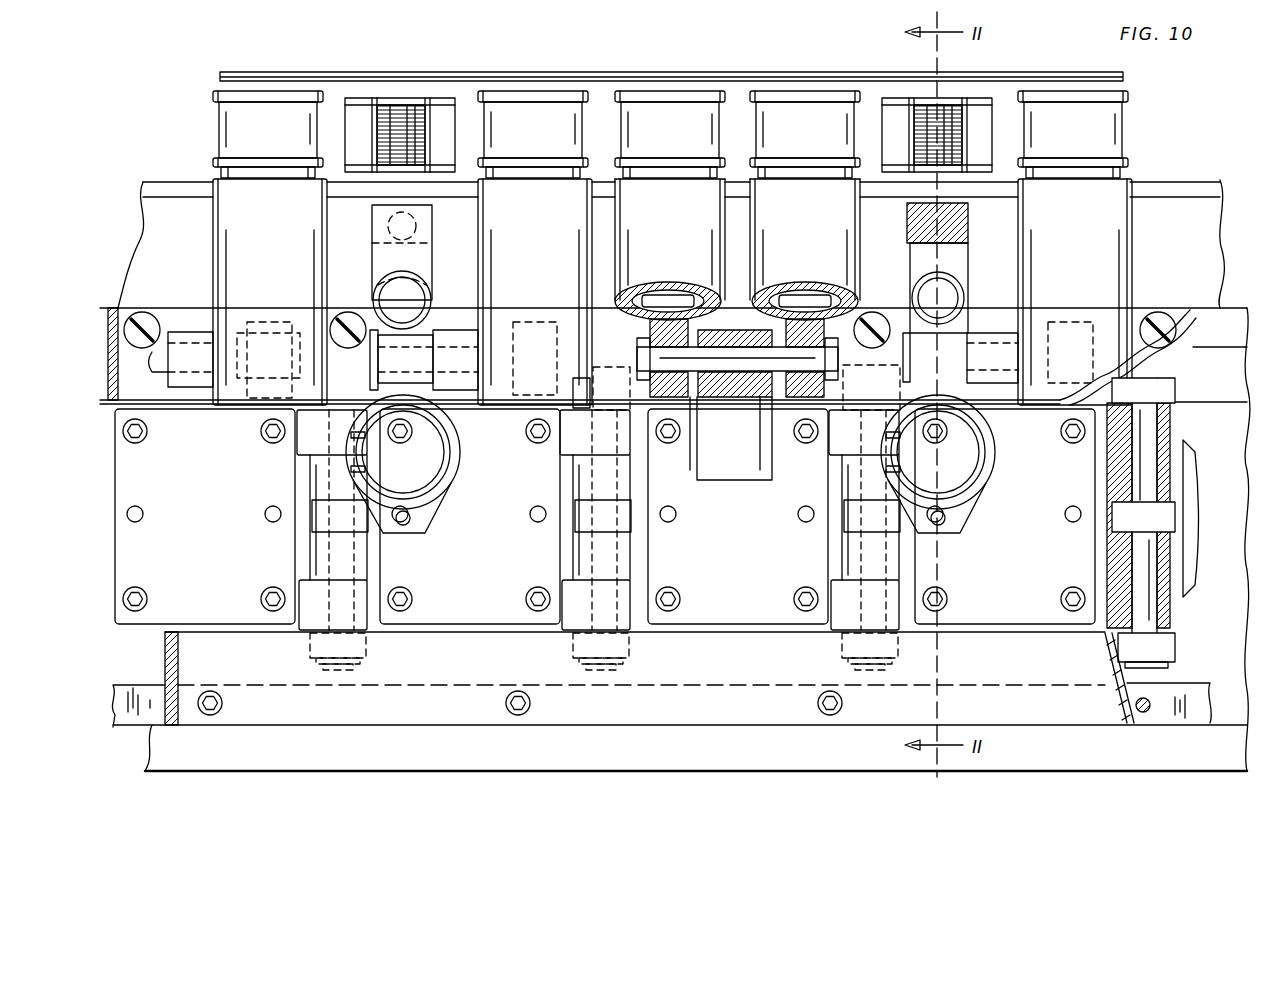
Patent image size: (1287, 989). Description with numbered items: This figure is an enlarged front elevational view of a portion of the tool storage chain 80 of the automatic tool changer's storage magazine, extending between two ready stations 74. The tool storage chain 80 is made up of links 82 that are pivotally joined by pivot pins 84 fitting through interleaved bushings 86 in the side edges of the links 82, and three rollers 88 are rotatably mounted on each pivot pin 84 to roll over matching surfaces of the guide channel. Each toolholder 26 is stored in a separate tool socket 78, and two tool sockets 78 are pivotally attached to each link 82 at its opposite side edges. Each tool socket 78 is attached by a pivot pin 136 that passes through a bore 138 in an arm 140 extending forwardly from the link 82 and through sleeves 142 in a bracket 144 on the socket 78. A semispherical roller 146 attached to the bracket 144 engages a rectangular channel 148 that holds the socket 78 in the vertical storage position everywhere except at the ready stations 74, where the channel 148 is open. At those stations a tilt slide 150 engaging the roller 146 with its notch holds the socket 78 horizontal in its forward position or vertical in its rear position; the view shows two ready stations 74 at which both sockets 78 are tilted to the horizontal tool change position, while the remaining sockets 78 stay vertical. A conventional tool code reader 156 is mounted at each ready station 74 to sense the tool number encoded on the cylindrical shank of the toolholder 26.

The toolholder 26 is at (238, 130).
The ready station 74 is at (448, 515).
The tool socket 78 is at (277, 226).
The tool storage chain 80 is at (725, 602).
The link 82 is at (222, 598).
The pivot pin 84 is at (330, 553).
The bushing 86 is at (1150, 430).
The roller 88 is at (1170, 390).
The pivot pin 136 is at (748, 360).
The bore 138 is at (710, 363).
The arm 140 is at (773, 443).
The sleeve 142 is at (668, 400).
The bracket 144 is at (650, 325).
The semispherical roller 146 is at (415, 300).
The rectangular channel 148 is at (1190, 248).
The tilt slide 150 is at (425, 268).
The tool code reader 156 is at (430, 125).